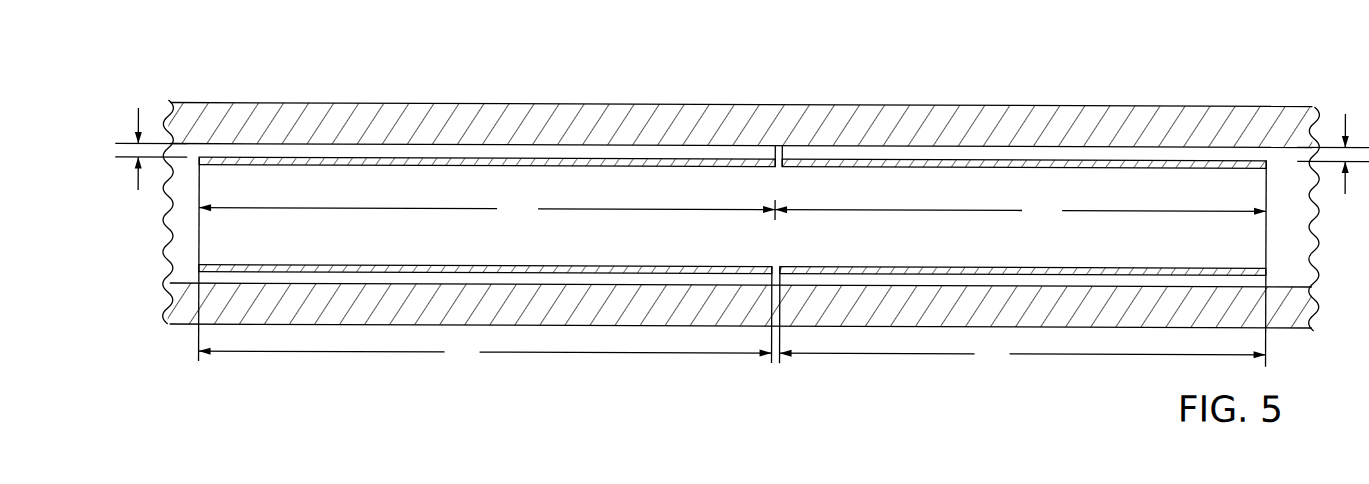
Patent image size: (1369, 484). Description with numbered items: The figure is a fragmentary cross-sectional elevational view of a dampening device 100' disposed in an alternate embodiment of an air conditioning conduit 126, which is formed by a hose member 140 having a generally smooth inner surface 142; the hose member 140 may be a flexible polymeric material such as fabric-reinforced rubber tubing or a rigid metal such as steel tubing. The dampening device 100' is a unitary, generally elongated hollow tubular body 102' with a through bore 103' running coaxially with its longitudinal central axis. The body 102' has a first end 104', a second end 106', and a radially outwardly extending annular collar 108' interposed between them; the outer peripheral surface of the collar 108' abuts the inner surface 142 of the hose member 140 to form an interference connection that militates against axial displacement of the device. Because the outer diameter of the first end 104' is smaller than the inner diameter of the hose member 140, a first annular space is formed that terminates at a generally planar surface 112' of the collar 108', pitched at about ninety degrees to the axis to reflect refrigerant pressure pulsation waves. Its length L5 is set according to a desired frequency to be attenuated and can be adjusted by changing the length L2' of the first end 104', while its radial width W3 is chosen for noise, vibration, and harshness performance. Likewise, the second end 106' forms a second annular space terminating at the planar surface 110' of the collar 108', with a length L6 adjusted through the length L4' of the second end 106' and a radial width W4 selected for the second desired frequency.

The dampening device 100' is at (486, 159).
The body 102' is at (547, 205).
The through bore 103' is at (306, 203).
The first end 104' is at (738, 186).
The second end 106' is at (1024, 209).
The annular collar 108' is at (773, 112).
The surface 110' is at (1023, 100).
The surface 112' is at (487, 99).
The conduit 126 is at (493, 104).
The hose member 140 is at (600, 138).
The inner surface 142 is at (650, 150).
The radial width of the first annular space W3 is at (138, 110).
The radial width of the second annular space W4 is at (1345, 112).
The length of the first end L2' is at (487, 209).
The length of the second end L4' is at (1020, 211).
The length of the first annular space L5 is at (485, 352).
The length of the second annular space L6 is at (1023, 354).